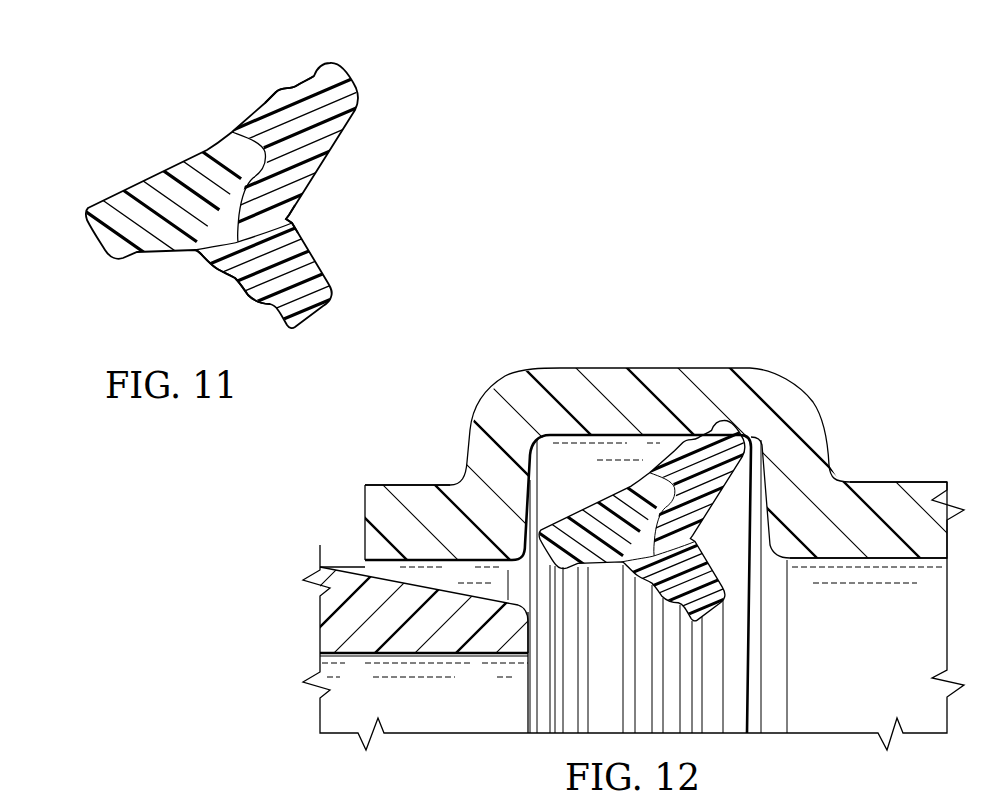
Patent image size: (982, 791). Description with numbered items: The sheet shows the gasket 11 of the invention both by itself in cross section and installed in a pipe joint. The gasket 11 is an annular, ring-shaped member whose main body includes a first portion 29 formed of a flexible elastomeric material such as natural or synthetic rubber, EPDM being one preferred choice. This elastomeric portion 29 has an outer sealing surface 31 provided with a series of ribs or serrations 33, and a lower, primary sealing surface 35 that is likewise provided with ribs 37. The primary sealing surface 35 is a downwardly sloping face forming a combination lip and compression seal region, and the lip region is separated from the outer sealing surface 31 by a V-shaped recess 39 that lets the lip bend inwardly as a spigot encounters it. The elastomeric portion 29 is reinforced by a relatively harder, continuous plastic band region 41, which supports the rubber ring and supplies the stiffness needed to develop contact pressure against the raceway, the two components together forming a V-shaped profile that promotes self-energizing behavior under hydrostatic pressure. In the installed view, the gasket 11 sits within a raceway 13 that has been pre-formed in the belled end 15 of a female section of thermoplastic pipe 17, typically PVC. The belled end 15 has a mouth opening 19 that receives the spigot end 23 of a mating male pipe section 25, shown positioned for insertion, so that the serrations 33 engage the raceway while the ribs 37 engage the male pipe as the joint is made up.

In FIG. 11, the gasket 11 is at (235, 203).
In FIG. 12, the raceway 13 is at (630, 437).
In FIG. 12, the belled end 15 is at (411, 484).
In FIG. 12, the thermoplastic pipe 17 is at (880, 483).
In FIG. 12, the mouth opening 19 is at (453, 567).
In FIG. 12, the spigot end 23 is at (457, 627).
In FIG. 12, the male pipe section 25 is at (345, 627).
In FIG. 11, the first portion 29 is at (328, 137).
In FIG. 12, the first portion 29 is at (640, 475).
In FIG. 11, the outer sealing surface 31 is at (311, 76).
In FIG. 11, the ribs or serrations 33 is at (282, 89).
In FIG. 11, the primary sealing surface 35 is at (282, 318).
In FIG. 11, the ribs 37 is at (251, 302).
In FIG. 11, the V-shaped recess 39 is at (334, 212).
In FIG. 11, the plastic band region 41 is at (104, 242).
In FIG. 12, the plastic band region 41 is at (597, 513).